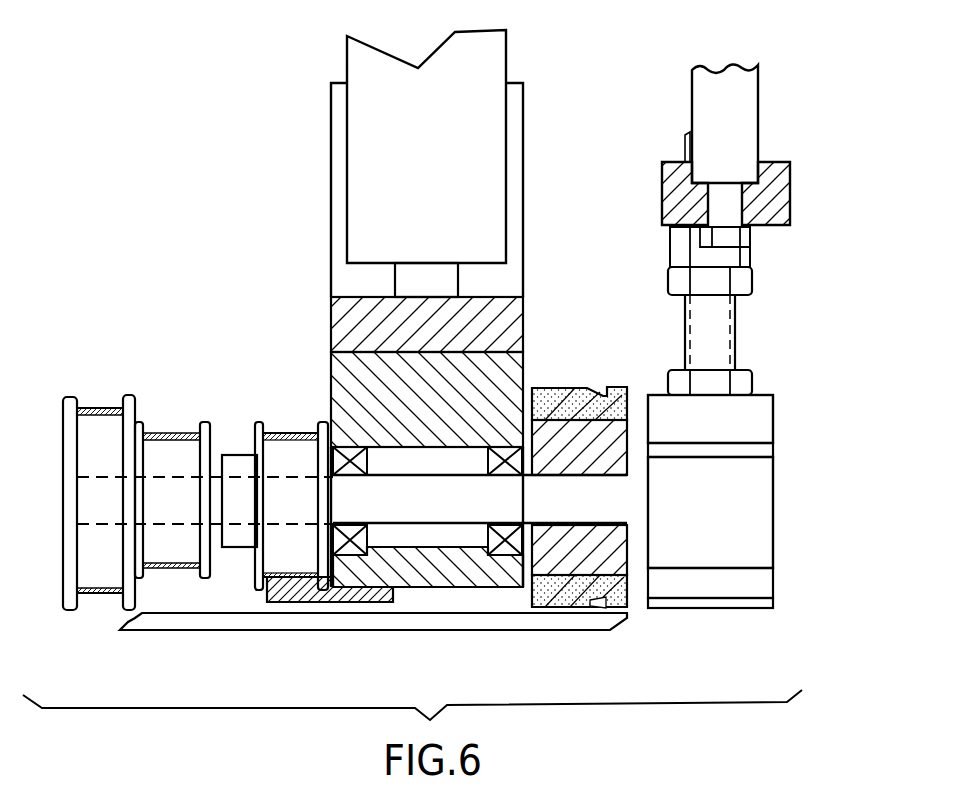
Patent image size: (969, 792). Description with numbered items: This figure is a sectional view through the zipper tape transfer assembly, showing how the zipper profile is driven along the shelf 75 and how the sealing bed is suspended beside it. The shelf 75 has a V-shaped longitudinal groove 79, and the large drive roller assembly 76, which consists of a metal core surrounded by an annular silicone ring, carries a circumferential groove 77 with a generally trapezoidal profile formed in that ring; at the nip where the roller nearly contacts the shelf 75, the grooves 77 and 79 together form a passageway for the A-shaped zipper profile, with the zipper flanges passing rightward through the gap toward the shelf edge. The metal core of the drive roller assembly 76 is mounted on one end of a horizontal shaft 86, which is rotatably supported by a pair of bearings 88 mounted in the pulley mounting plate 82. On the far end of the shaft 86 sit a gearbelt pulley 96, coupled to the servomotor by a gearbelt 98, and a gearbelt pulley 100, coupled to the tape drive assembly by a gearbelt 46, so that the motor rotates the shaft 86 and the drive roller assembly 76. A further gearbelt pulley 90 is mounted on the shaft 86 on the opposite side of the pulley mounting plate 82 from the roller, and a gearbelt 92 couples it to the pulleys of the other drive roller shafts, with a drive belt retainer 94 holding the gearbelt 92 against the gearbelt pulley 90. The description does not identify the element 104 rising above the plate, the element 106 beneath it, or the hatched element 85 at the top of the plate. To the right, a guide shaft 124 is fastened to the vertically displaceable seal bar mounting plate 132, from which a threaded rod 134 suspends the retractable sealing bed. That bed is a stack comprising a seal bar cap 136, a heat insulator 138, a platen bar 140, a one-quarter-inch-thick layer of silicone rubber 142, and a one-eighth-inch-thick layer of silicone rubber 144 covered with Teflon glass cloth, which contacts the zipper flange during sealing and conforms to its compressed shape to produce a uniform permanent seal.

The gearbelt 46 is at (168, 437).
The shelf 75 is at (547, 630).
The large drive roller assembly 76 is at (630, 437).
The circumferential groove 77 is at (603, 398).
The V-shaped longitudinal groove 79 is at (597, 613).
The pulley mounting plate 82 is at (328, 383).
The housing cap 85 is at (523, 318).
The horizontal shaft 86 is at (440, 498).
The bearings 88 is at (355, 547).
The gearbelt pulley 90 is at (253, 568).
The gearbelt 92 is at (268, 602).
The drive belt retainer 94 is at (293, 592).
The gearbelt pulley 96 is at (72, 400).
The gearbelt 98 is at (105, 593).
The gearbelt pulley 100 is at (192, 417).
The post 104 is at (498, 135).
The spacer block 106 is at (443, 282).
The guide shaft 124 is at (758, 88).
The seal bar mounting plate 132 is at (790, 197).
The threaded rod 134 is at (737, 330).
The seal bar cap 136 is at (775, 402).
The heat insulator 138 is at (775, 448).
The platen bar 140 is at (775, 475).
The layer of silicone rubber 142 is at (775, 582).
The layer of silicone rubber covered with Teflon glass cloth 144 is at (775, 602).